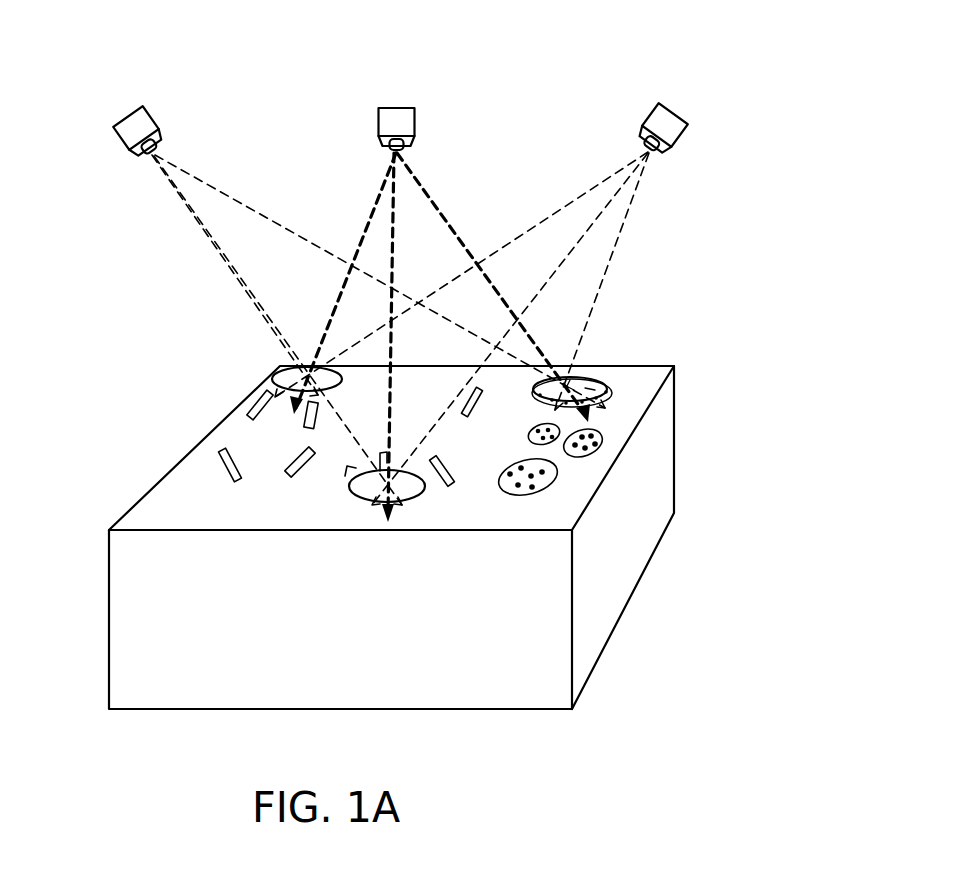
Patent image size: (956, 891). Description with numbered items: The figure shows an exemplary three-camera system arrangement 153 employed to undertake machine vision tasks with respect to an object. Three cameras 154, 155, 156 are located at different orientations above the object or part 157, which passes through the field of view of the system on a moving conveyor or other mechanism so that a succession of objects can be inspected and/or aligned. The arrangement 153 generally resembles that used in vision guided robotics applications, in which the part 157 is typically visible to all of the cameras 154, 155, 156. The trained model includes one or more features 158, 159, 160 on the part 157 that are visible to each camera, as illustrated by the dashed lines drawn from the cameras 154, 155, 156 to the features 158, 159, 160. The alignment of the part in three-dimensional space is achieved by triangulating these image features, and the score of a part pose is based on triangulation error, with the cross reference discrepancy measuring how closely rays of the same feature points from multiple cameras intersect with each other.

The three-camera system arrangement 153 is at (526, 104).
The camera 154 is at (141, 105).
The camera 155 is at (378, 108).
The camera 156 is at (663, 103).
The object or part 157 is at (684, 427).
The feature 158 is at (595, 378).
The feature 159 is at (358, 495).
The feature 160 is at (282, 392).